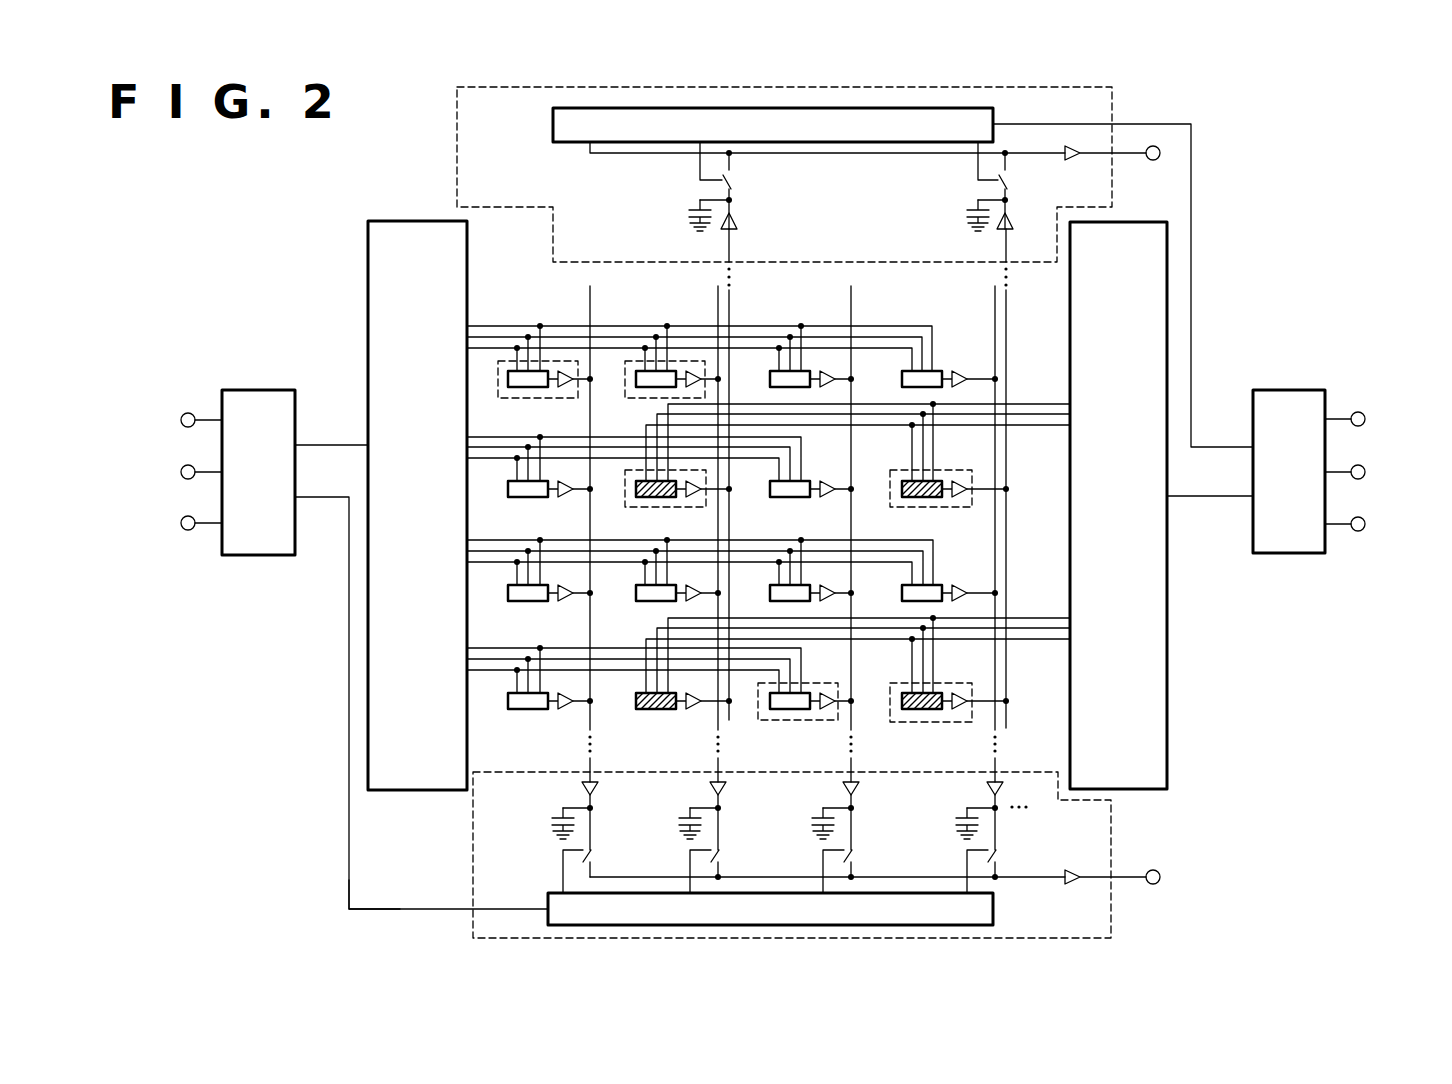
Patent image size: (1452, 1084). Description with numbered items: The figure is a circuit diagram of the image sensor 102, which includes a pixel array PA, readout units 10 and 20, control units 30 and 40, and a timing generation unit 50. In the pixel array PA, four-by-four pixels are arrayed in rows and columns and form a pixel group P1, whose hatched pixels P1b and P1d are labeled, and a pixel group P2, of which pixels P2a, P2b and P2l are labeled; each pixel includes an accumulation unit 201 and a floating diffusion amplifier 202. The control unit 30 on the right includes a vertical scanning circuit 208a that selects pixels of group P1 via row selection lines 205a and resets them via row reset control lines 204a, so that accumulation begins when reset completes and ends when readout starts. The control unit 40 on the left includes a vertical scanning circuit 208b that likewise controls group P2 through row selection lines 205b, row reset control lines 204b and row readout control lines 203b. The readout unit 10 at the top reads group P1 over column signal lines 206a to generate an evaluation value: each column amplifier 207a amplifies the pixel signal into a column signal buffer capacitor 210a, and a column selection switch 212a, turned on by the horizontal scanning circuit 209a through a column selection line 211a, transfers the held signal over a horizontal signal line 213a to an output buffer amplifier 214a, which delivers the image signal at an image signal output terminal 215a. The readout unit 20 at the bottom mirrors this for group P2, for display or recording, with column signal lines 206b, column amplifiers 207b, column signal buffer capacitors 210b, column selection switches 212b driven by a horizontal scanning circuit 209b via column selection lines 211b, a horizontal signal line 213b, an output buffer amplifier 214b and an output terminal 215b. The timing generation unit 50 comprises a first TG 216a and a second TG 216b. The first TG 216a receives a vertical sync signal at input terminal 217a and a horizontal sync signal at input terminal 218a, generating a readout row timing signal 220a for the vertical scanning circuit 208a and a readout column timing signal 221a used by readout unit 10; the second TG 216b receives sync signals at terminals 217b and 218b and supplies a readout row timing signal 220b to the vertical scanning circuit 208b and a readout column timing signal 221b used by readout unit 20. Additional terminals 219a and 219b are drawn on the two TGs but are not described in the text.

The readout unit 10 is at (1113, 101).
The readout unit 20 is at (1113, 908).
The control unit 30 is at (1165, 532).
The control unit 40 is at (382, 509).
The timing generation unit 50 is at (215, 575).
The image sensor 102 is at (308, 904).
The accumulation unit 201 is at (530, 389).
The floating diffusion amplifier 202 is at (571, 390).
The row readout control lines 203b is at (622, 325).
The row reset control lines 204a is at (962, 417).
The row reset control lines 204b is at (762, 336).
The row selection lines 205a is at (1037, 428).
The row selection lines 205b is at (887, 346).
The column signal lines 206a is at (729, 718).
The column signal lines 206b is at (589, 722).
The column amplifier 207a is at (738, 223).
The column amplifier 207b is at (600, 791).
The vertical scanning circuit 208a is at (1168, 711).
The vertical scanning circuit 208b is at (415, 792).
The horizontal scanning circuit 209a is at (553, 126).
The horizontal scanning circuit 209b is at (994, 913).
The column signal buffer capacitor 210a is at (687, 214).
The column signal buffer capacitor 210b is at (552, 820).
The column selection line 211a is at (700, 176).
The column selection line 211b is at (563, 876).
The column selection switch 212a is at (737, 186).
The column selection switch 212b is at (593, 858).
The horizontal signal line 213a is at (862, 156).
The horizontal signal line 213b is at (772, 877).
The output buffer amplifier 214a is at (1079, 160).
The output buffer amplifier 214b is at (1072, 868).
The image signal output terminal 215a is at (1152, 161).
The image signal output terminal 215b is at (1161, 878).
The first TG 216a is at (1305, 389).
The second TG 216b is at (258, 389).
The vertical sync signal input terminal 217a is at (1366, 420).
The vertical sync signal input terminal 217b is at (180, 421).
The horizontal sync signal input terminal 218a is at (1366, 473).
The horizontal sync signal input terminal 218b is at (180, 473).
The input terminal 219a is at (1366, 525).
The input terminal 219b is at (180, 524).
The readout row timing signal 220a is at (1203, 500).
The readout row timing signal 220b is at (325, 443).
The readout column timing signal 221a is at (1217, 445).
The readout column timing signal 221b is at (317, 501).
The pixel array PA is at (743, 476).
The pixel group P1 is at (787, 504).
The pixel group P2 is at (530, 331).
The pixel P1b is at (618, 487).
The pixel P1d is at (908, 723).
The pixel P2a is at (530, 361).
The pixel P2b is at (688, 361).
The pixel P2l is at (822, 721).